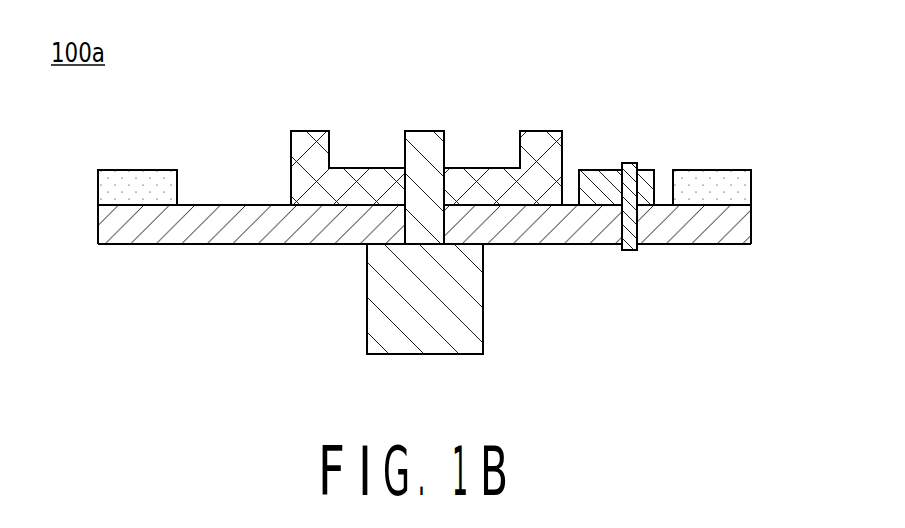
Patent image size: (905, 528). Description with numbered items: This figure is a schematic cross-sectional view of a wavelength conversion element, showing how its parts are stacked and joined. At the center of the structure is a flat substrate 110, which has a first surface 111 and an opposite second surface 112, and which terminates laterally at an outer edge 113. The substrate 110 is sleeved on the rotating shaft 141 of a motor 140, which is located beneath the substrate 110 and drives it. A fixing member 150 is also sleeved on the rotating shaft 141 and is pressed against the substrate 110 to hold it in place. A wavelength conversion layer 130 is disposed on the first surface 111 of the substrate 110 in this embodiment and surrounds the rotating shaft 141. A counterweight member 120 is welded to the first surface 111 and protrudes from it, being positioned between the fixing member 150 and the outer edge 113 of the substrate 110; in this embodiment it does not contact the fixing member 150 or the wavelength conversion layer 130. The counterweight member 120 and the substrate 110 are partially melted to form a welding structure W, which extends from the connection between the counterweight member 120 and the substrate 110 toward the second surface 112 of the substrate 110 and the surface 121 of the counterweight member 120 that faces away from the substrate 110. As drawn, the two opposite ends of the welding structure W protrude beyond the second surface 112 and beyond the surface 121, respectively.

The substrate 110 is at (233, 222).
The first surface 111 is at (723, 206).
The second surface 112 is at (723, 245).
The outer edge 113 is at (753, 227).
The counterweight member 120 is at (660, 170).
The surface of the counterweight member away from the substrate 121 is at (595, 168).
The wavelength conversion layer 130 is at (712, 180).
The motor 140 is at (467, 308).
The rotating shaft 141 is at (425, 140).
The fixing member 150 is at (307, 143).
The welding structure W is at (631, 243).